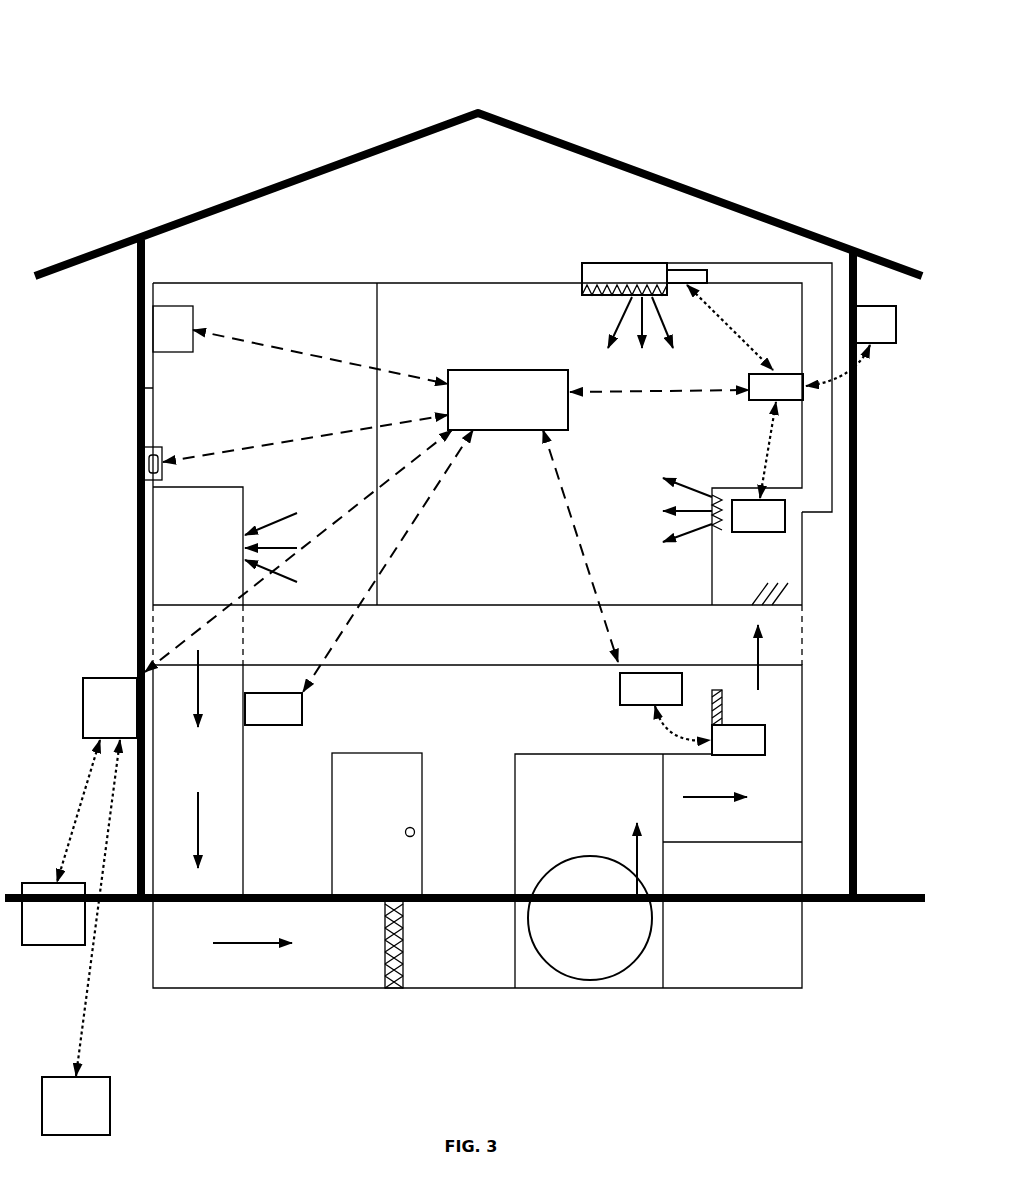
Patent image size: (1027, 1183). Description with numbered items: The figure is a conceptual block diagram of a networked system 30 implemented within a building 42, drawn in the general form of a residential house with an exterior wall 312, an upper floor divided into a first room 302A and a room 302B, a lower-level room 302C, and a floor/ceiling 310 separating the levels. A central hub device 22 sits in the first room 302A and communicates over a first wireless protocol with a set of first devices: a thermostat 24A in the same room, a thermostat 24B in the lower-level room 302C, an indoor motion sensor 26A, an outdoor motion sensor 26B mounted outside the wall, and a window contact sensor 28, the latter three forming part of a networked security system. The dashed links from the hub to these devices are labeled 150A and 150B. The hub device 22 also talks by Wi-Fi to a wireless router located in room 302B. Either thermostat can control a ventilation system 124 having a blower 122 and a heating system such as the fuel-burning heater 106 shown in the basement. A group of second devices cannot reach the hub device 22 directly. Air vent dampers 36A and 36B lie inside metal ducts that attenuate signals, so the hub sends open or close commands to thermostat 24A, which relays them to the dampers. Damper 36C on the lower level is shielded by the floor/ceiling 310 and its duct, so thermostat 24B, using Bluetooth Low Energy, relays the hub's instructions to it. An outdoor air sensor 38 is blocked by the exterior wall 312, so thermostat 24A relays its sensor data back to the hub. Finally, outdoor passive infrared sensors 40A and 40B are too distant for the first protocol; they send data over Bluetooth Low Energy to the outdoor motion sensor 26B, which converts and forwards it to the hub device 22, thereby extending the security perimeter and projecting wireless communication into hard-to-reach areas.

The networked system 30 is at (203, 64).
The building 42 is at (667, 178).
The air vent damper 36B is at (693, 268).
The exterior wall 312 is at (817, 328).
The outdoor air sensor 38 is at (865, 334).
The room 302B is at (198, 315).
The first room 302A is at (486, 334).
The central hub device 22 is at (498, 411).
The thermostat 24A is at (761, 396).
The window contact sensor 28 is at (143, 460).
The first wireless communication link 150A is at (343, 385).
The second wireless communication link 150B is at (427, 493).
The air vent damper 36A is at (743, 526).
The ventilation system 124 is at (743, 573).
The floor/ceiling 310 is at (492, 642).
The lower-level room 302C is at (399, 692).
The outdoor motion sensor 26B is at (95, 718).
The indoor motion sensor 26A is at (258, 719).
The thermostat 24B is at (636, 699).
The air vent damper 36C is at (724, 750).
The passive infrared sensor 40A is at (38, 924).
The passive infrared sensor 40B is at (61, 1115).
The blower 122 is at (588, 855).
The fuel-burning heater 106 is at (666, 932).